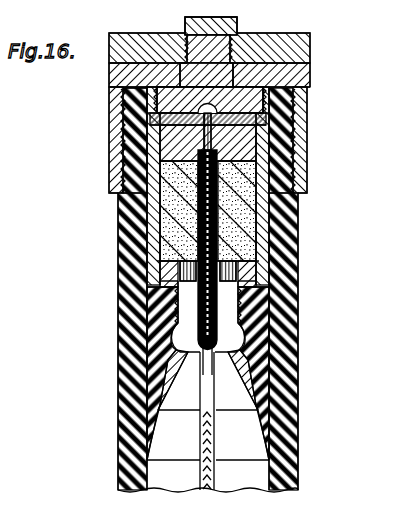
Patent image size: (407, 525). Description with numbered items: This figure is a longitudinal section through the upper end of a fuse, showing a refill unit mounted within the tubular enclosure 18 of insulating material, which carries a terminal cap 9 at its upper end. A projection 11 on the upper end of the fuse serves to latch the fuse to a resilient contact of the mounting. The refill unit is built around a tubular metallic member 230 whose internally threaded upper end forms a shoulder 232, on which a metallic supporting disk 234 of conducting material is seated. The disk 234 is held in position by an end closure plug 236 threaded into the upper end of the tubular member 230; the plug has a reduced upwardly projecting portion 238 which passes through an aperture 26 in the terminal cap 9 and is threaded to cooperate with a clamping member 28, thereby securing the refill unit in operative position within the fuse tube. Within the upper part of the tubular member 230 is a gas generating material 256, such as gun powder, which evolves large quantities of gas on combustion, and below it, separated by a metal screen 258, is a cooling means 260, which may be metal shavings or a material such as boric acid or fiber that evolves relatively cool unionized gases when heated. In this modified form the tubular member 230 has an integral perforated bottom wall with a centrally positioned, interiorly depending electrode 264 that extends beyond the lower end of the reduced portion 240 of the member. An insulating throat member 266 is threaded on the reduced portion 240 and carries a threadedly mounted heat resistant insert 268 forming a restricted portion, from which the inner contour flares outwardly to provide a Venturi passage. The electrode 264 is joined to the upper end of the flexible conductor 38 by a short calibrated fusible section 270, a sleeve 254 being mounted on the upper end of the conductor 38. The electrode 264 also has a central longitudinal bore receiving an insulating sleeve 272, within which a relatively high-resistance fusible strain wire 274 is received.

The terminal cap 9 is at (310, 100).
The projection 11 is at (237, 23).
The tubular enclosure 18 is at (117, 435).
The aperture 26 is at (180, 63).
The clamping member 28 is at (310, 48).
The flexible conductor 38 is at (210, 492).
The tubular metallic member 230 is at (297, 250).
The shoulder 232 is at (303, 123).
The metallic supporting disk 234 is at (127, 110).
The end closure plug 236 is at (123, 93).
The reduced upwardly projecting portion 238 is at (216, 62).
The reduced portion 240 is at (223, 318).
The sleeve 254 is at (140, 391).
The gas generating material 256 is at (122, 128).
The metal screen 258 is at (135, 170).
The cooling means 260 is at (150, 215).
The electrode 264 is at (295, 332).
The insulating throat member 266 is at (295, 403).
The insert 268 is at (138, 357).
The calibrated fusible section 270 is at (297, 368).
The insulating sleeve 272 is at (298, 212).
The fusible strain wire 274 is at (293, 150).